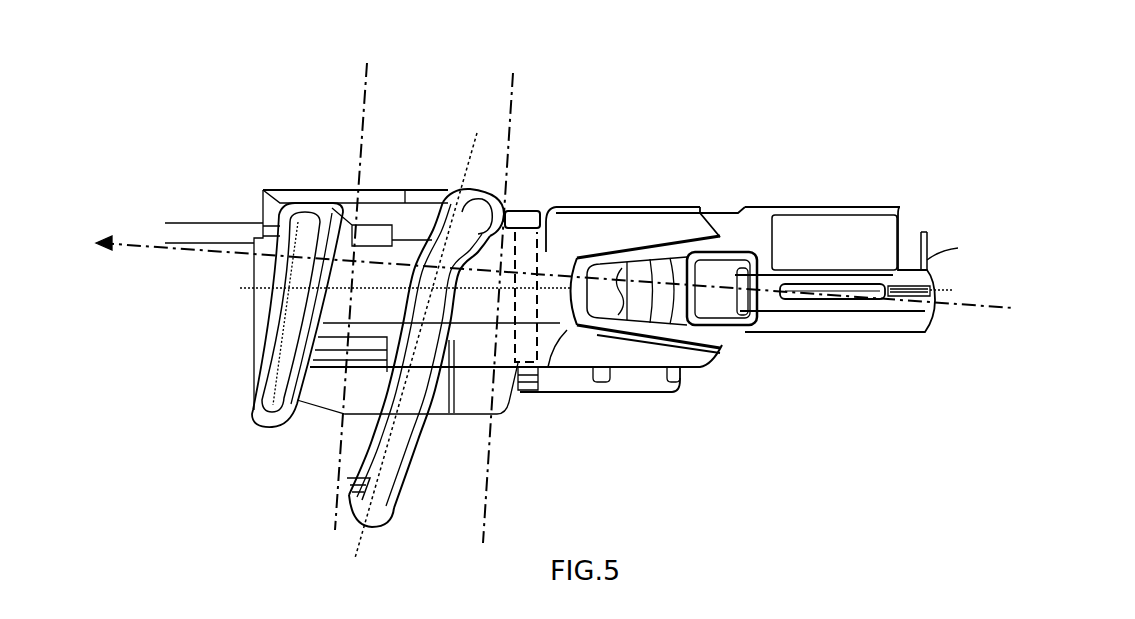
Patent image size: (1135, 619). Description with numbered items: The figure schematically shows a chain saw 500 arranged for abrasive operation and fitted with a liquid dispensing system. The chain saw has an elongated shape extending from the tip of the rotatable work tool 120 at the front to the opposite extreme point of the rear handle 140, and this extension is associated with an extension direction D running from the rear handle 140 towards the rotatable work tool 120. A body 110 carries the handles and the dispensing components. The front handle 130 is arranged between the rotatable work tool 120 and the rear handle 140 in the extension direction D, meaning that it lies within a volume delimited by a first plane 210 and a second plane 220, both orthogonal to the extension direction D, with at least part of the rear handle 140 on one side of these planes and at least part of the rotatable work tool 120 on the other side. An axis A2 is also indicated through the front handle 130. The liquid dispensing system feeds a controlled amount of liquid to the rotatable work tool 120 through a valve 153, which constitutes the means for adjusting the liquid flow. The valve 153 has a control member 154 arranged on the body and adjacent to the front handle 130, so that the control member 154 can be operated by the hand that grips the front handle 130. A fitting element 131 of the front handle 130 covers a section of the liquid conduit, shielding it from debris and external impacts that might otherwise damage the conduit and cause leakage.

The chain saw 500 is at (284, 126).
The housing body 110 is at (617, 186).
The rotatable work tool 120 is at (227, 223).
The front handle 130 is at (352, 430).
The fitting element 131 is at (512, 205).
The rear handle 140 is at (775, 303).
The valve 153 is at (528, 338).
The control member 154 is at (540, 210).
The first plane 210 is at (368, 100).
The second plane 220 is at (513, 100).
The axis A2 is at (422, 342).
The extension direction D is at (988, 307).